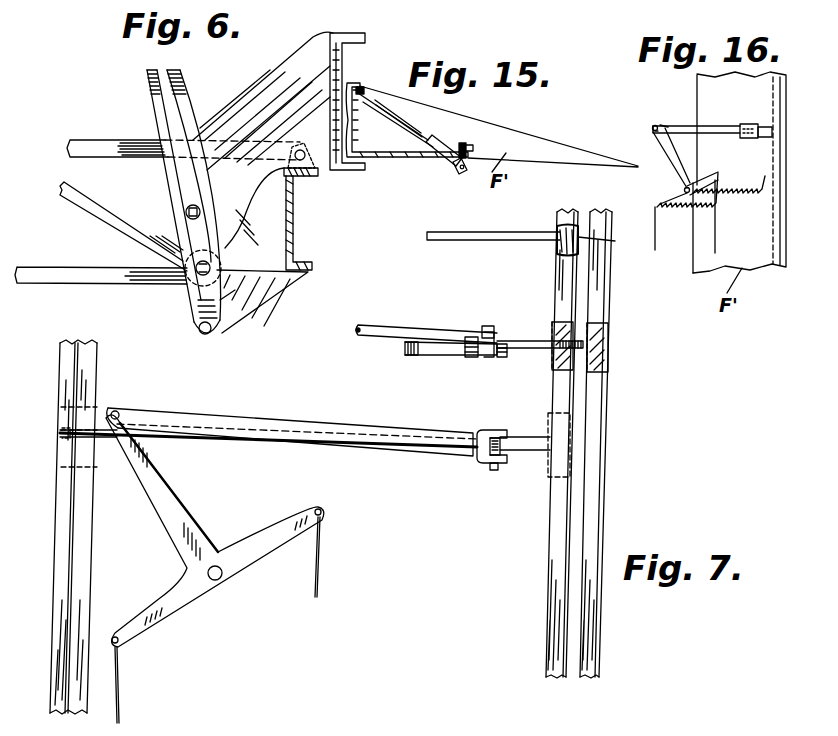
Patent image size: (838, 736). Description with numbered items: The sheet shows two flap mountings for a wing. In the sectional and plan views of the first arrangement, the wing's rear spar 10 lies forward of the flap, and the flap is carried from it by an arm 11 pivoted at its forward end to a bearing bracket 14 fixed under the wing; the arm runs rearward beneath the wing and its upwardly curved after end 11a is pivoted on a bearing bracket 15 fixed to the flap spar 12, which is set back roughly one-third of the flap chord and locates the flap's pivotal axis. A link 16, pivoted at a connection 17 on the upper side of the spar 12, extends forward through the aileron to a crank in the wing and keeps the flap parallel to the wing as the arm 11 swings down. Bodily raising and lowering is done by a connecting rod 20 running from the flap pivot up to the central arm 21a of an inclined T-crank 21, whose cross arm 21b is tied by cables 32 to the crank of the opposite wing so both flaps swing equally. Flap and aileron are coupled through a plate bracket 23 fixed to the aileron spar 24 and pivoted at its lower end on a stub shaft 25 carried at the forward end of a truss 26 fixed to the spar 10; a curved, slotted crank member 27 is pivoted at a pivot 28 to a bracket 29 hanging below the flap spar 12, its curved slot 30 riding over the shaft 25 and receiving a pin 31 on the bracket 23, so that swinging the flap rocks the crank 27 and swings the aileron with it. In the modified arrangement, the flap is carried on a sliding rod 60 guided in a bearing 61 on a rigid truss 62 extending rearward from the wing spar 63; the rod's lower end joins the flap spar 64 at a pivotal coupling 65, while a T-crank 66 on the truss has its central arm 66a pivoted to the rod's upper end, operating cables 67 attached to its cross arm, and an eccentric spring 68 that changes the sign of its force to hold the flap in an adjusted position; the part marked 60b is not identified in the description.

In FIG. 7, the rear wing beam or spar 10 is at (73, 597).
In FIG. 7, the arm 11 is at (172, 437).
In FIG. 7, the upwardly bent or curved after end 11a is at (492, 470).
In FIG. 6, the spar 12 is at (293, 231).
In FIG. 7, the spar 12 is at (557, 217).
In FIG. 7, the pivot or bearing bracket 14 is at (66, 440).
In FIG. 7, the bearing bracket 15 is at (518, 447).
In FIG. 6, the link 16 is at (97, 148).
In FIG. 7, the link 16 is at (493, 233).
In FIG. 6, the pivotal connection 17 is at (302, 147).
In FIG. 7, the pivotal connection 17 is at (609, 249).
In FIG. 7, the connecting rod 20 is at (277, 427).
In FIG. 7, the T-crank 21 is at (215, 550).
In FIG. 7, the central arm 21a is at (177, 507).
In FIG. 7, the cross arm 21b is at (193, 603).
In FIG. 6, the bracket or plate member 23 is at (248, 86).
In FIG. 7, the bracket or plate member 23 is at (522, 341).
In FIG. 6, the spar 24 is at (345, 66).
In FIG. 7, the spar 24 is at (602, 317).
In FIG. 6, the horizontal pivot pin or stub shaft 25 is at (192, 281).
In FIG. 7, the horizontal pivot pin or stub shaft 25 is at (486, 326).
In FIG. 6, the supporting truss 26 is at (110, 228).
In FIG. 7, the supporting truss 26 is at (388, 332).
In FIG. 6, the curved and slotted crank member 27 is at (182, 100).
In FIG. 7, the curved and slotted crank member 27 is at (433, 355).
In FIG. 6, the pivot 28 is at (205, 334).
In FIG. 7, the pivot 28 is at (500, 358).
In FIG. 6, the bracket 29 is at (257, 303).
In FIG. 7, the bracket 29 is at (562, 365).
In FIG. 6, the curved slot 30 is at (170, 103).
In FIG. 6, the pin 31 is at (185, 208).
In FIG. 7, the pin 31 is at (472, 357).
In FIG. 7, the cables 32 is at (318, 576).
In FIG. 15, the sliding rod 60 is at (430, 140).
In FIG. 16, the sliding rod 60 is at (704, 130).
In FIG. 16, the rod arm 60b is at (690, 194).
In FIG. 15, the bearing 61 is at (452, 152).
In FIG. 16, the bearing 61 is at (742, 137).
In FIG. 15, the rigid truss 62 is at (386, 148).
In FIG. 15, the wing spar 63 is at (360, 86).
In FIG. 15, the spar 64 is at (470, 155).
In FIG. 16, the spar 64 is at (780, 100).
In FIG. 15, the pivotal coupling 65 is at (458, 172).
In FIG. 16, the pivotal coupling 65 is at (767, 127).
In FIG. 16, the T-crank 66 is at (680, 184).
In FIG. 15, the central arm 66a is at (499, 126).
In FIG. 16, the operating cables 67 is at (715, 243).
In FIG. 16, the eccentric spring 68 is at (723, 193).